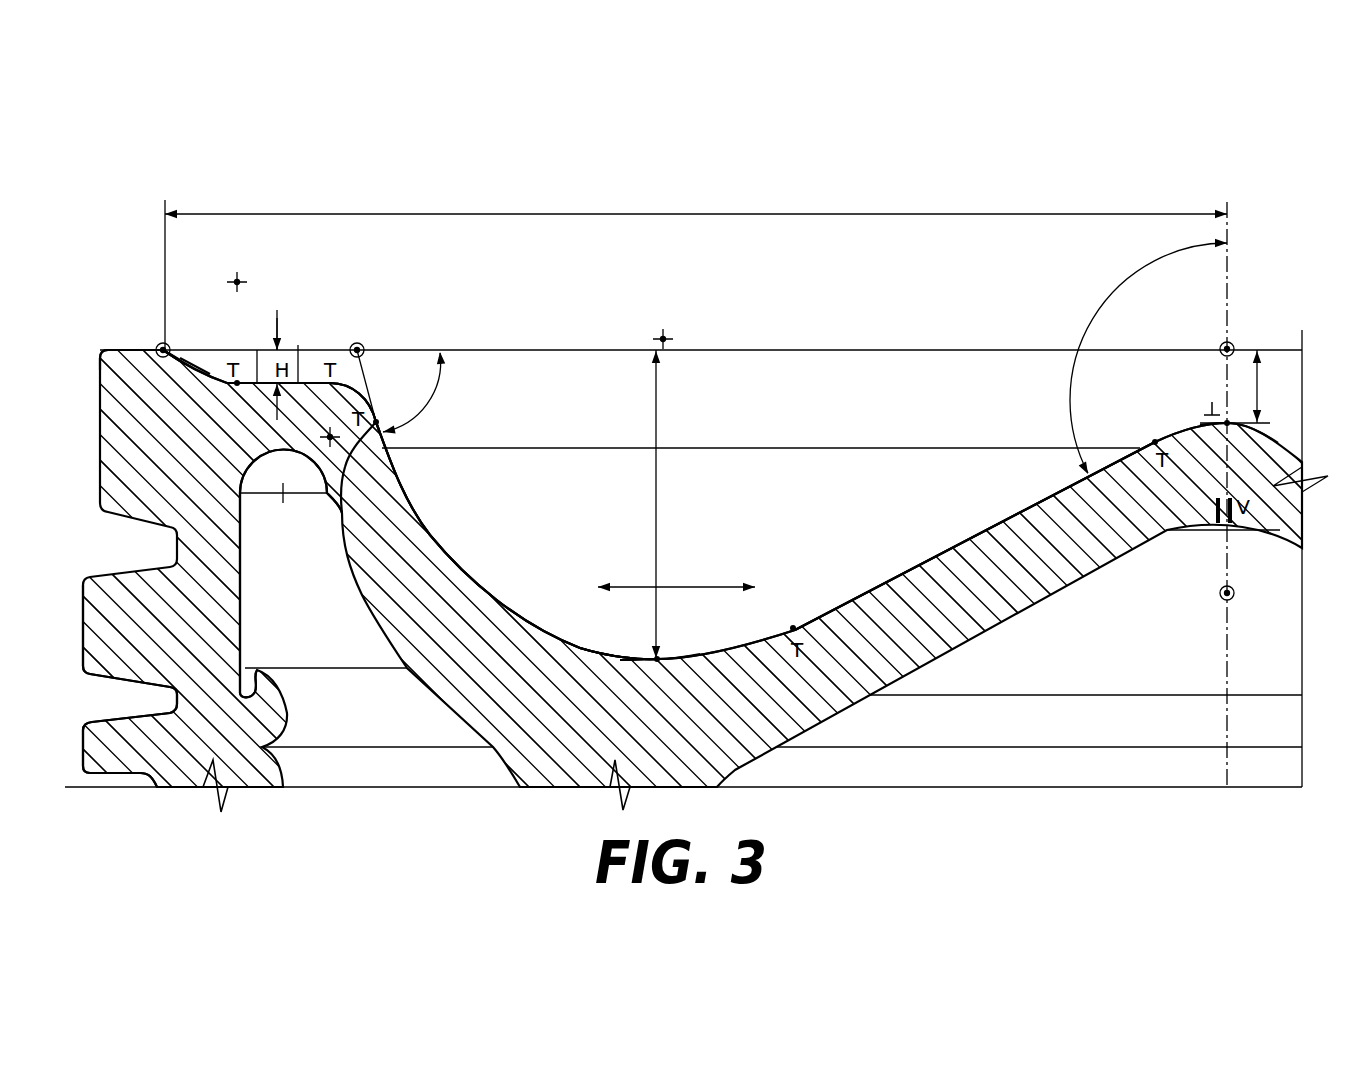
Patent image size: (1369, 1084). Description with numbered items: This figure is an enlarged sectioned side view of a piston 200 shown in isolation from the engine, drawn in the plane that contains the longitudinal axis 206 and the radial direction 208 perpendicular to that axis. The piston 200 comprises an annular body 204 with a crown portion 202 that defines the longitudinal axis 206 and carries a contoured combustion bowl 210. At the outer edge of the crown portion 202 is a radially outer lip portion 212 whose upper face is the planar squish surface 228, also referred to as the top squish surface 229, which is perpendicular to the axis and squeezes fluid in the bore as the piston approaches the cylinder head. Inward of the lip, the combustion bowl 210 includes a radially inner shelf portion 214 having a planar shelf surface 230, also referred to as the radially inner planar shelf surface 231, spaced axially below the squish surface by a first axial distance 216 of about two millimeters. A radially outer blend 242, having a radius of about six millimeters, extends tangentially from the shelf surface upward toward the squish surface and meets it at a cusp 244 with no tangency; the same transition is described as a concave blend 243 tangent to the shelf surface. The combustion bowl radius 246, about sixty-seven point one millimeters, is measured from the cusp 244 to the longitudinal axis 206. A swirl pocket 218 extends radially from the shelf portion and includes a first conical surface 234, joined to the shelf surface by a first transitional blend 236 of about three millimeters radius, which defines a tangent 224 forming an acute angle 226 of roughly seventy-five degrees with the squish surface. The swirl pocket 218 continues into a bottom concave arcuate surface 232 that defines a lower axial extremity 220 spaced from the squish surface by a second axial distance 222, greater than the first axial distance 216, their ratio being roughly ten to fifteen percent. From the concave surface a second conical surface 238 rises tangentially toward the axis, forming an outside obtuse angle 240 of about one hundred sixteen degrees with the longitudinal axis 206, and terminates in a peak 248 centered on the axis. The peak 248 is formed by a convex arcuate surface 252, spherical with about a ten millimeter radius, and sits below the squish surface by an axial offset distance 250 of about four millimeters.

The piston 200 is at (845, 175).
The crown portion 202 is at (96, 369).
The annular body 204 is at (183, 765).
The longitudinal axis 206 is at (1227, 232).
The radial direction 208 is at (687, 587).
The contoured combustion bowl 210 is at (893, 415).
The radially outer lip portion 212 is at (130, 343).
The radially inner shelf portion 214 is at (315, 378).
The first axial distance 216 is at (277, 318).
The swirl pocket 218 is at (516, 601).
The lower axial extremity 220 is at (660, 662).
The second axial distance 222 is at (658, 480).
The tangent 224 is at (378, 440).
The acute angle 226 is at (428, 400).
The planar squish surface 228 is at (100, 347).
The top squish surface 229 is at (160, 348).
The planar shelf surface 230 is at (298, 345).
The radially inner planar shelf surface 231 is at (257, 350).
The bottom concave arcuate surface 232 is at (633, 661).
The first conical surface 234 is at (337, 523).
The first transitional blend 236 is at (367, 391).
The second conical surface 238 is at (866, 591).
The outside obtuse angle 240 is at (1122, 287).
The radially outer blend 242 is at (212, 387).
The concave blend 243 is at (195, 371).
The cusp 244 is at (160, 357).
The combustion bowl radius 246 is at (677, 214).
The peak 248 is at (1243, 431).
The axial offset distance 250 is at (1258, 393).
The convex arcuate surface 252 is at (1199, 421).